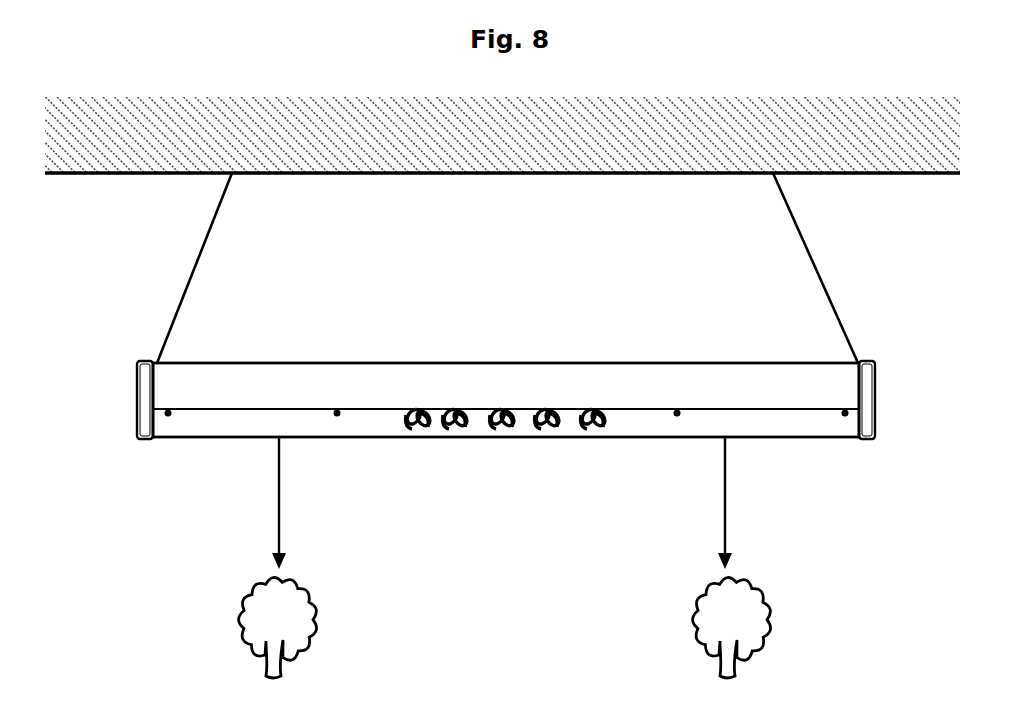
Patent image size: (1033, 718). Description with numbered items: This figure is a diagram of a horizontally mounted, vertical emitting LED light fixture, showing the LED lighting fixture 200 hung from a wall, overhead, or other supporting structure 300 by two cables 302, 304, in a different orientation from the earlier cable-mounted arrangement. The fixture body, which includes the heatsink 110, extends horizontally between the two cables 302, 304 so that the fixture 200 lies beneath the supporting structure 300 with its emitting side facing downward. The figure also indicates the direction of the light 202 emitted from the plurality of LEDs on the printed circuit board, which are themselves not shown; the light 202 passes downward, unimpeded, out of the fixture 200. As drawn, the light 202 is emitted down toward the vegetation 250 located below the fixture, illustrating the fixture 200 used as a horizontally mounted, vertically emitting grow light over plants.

The supporting structure 300 is at (610, 146).
The cable 302 is at (207, 241).
The cable 304 is at (785, 210).
The LED lighting fixture 200 is at (506, 355).
The heatsink 110 is at (338, 385).
The light 202 is at (725, 495).
The vegetation 250 is at (283, 603).